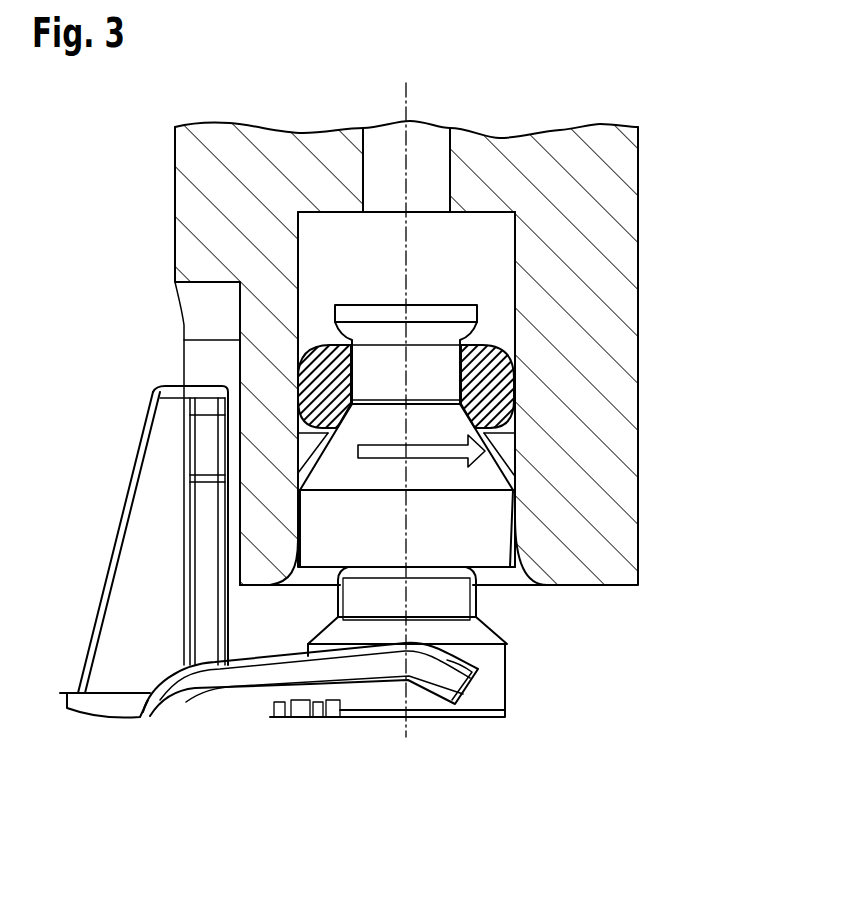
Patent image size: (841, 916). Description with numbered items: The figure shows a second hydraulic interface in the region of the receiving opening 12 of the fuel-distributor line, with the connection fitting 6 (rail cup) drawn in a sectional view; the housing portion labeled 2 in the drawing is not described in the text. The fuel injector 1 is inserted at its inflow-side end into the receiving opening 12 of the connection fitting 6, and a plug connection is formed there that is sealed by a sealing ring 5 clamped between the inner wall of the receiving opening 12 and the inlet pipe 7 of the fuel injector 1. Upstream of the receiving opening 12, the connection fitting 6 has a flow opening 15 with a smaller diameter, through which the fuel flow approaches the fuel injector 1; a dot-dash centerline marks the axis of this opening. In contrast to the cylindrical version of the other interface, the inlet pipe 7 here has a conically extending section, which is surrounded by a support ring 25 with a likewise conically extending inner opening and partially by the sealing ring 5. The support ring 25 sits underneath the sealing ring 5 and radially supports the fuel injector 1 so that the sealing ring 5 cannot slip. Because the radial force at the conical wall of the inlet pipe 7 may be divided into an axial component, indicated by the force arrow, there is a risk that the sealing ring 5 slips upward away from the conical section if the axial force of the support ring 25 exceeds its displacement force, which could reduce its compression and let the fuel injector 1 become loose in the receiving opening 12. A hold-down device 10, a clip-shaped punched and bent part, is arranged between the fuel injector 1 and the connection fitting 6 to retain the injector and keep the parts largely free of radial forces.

The fuel injector 1 is at (518, 681).
The valve body 2 is at (393, 398).
The sealing ring 5 is at (497, 368).
The connection fitting 6 is at (607, 283).
The inlet pipe 7 is at (470, 540).
The hold-down device 10 is at (363, 670).
The receiving opening 12 is at (305, 228).
The flow opening 15 is at (383, 135).
The support ring 25 is at (505, 458).